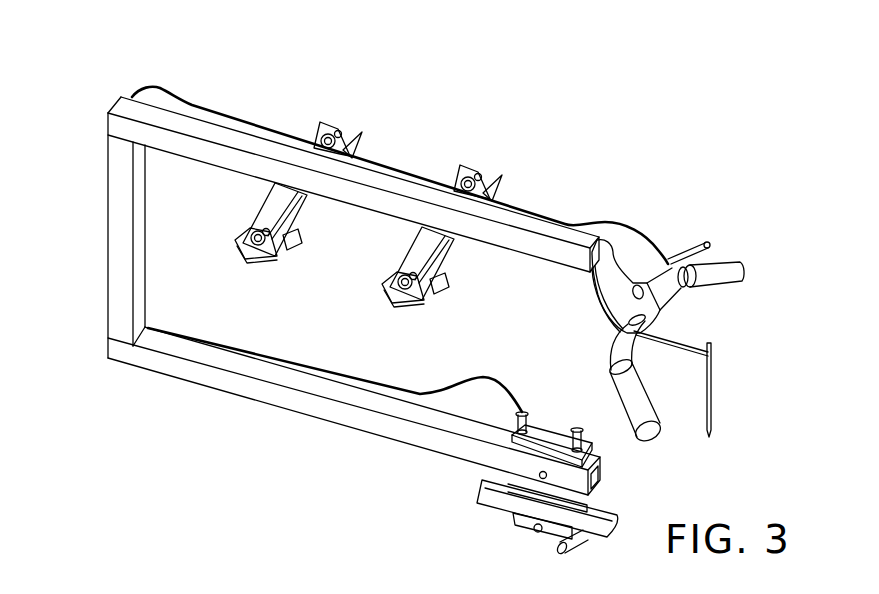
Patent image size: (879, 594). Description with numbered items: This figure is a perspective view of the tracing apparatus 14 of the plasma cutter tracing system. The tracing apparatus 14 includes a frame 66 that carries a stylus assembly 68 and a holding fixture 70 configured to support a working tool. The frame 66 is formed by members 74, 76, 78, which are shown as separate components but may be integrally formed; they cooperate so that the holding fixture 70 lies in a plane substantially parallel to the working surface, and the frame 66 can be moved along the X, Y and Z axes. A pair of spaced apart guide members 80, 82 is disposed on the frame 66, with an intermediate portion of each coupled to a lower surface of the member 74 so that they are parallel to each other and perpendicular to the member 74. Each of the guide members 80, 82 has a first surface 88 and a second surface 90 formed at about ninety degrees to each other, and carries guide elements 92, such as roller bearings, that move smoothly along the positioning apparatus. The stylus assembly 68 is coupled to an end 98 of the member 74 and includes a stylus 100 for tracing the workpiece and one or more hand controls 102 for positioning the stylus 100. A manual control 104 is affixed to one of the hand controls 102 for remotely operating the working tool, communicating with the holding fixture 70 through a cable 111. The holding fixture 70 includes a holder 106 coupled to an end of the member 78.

The tracing apparatus 14 is at (114, 107).
The frame 66 is at (108, 158).
The member 74 is at (188, 130).
The member 76 is at (118, 197).
The member 78 is at (478, 432).
The guide member 80 is at (321, 122).
The guide member 82 is at (461, 165).
The first surface 88 is at (258, 256).
The second surface 90 is at (300, 218).
The guide element 92 is at (247, 236).
The end 98 is at (585, 245).
The cable 111 is at (630, 225).
The manual control 104 is at (703, 248).
The stylus 100 is at (716, 410).
The stylus assembly 68 is at (717, 390).
The hand control 102 is at (658, 434).
The holding fixture 70 is at (552, 437).
The holder 106 is at (600, 510).